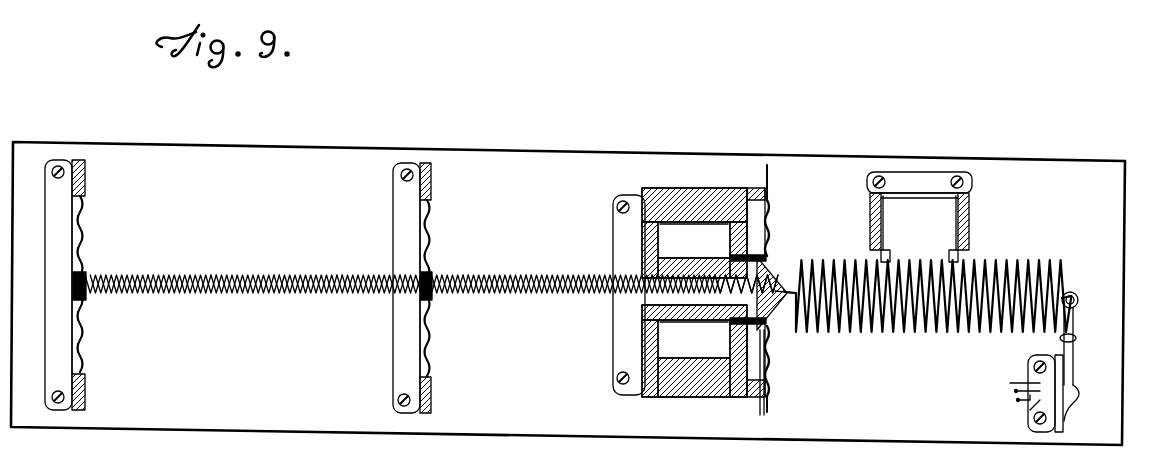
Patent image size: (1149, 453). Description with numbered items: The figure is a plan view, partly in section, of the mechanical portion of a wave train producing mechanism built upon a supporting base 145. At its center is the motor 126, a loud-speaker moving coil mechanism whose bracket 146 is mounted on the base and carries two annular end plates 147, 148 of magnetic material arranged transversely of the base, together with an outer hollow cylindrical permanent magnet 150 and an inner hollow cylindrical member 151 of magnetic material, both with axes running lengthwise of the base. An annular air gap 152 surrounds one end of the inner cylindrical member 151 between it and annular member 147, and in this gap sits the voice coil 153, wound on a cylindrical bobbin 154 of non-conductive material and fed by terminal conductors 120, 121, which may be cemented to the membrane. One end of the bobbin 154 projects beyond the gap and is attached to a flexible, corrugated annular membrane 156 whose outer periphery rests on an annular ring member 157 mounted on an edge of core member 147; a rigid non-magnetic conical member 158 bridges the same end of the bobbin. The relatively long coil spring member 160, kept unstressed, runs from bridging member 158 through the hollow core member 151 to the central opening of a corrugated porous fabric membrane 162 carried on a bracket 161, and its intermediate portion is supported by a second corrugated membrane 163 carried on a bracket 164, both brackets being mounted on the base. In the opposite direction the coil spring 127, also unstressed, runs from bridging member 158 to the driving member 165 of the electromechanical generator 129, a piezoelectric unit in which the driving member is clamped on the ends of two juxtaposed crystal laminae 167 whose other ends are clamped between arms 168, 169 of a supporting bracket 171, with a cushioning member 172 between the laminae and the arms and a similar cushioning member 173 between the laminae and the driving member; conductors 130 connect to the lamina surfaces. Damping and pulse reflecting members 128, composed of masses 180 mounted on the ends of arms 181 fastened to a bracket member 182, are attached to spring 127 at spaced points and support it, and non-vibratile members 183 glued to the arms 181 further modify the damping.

The supporting base 145 is at (634, 160).
The bracket 161 is at (50, 186).
The corrugated porous fabric membrane 162 is at (82, 357).
The coil spring member 160 is at (258, 275).
The bracket 164 is at (393, 355).
The second corrugated membrane 163 is at (432, 350).
The bracket 146 is at (616, 205).
The annular end plate 148 is at (648, 410).
The motor 126 is at (702, 186).
The outer hollow cylindrical permanent magnet 150 is at (685, 398).
The annular end plate 147 is at (742, 398).
The annular air gap 152 is at (694, 233).
The cylindrical bobbin 154 is at (732, 257).
The inner hollow cylindrical member 151 is at (694, 332).
The voice coil 153 is at (733, 324).
The terminal conductor 121 is at (766, 170).
The flexible annular membrane 156 is at (771, 382).
The conical member 158 is at (779, 318).
The annular ring member 157 is at (761, 404).
The terminal conductor 120 is at (769, 410).
The coil spring 127 is at (945, 347).
The bracket member 182 is at (968, 186).
The arm 181 is at (870, 210).
The member 183 is at (872, 236).
The damping and pulse reflecting member 128 is at (954, 215).
The mass 180 is at (958, 252).
The arm 168 is at (1073, 393).
The driving member 165 is at (1071, 291).
The cushioning member 173 is at (1078, 302).
The crystal lamina 167 is at (1074, 326).
The cushioning member 172 is at (1084, 346).
The electromechanical generator 129 is at (1075, 385).
The arm 169 is at (1007, 375).
The conductor 130 is at (1012, 403).
The supporting bracket 171 is at (1032, 412).